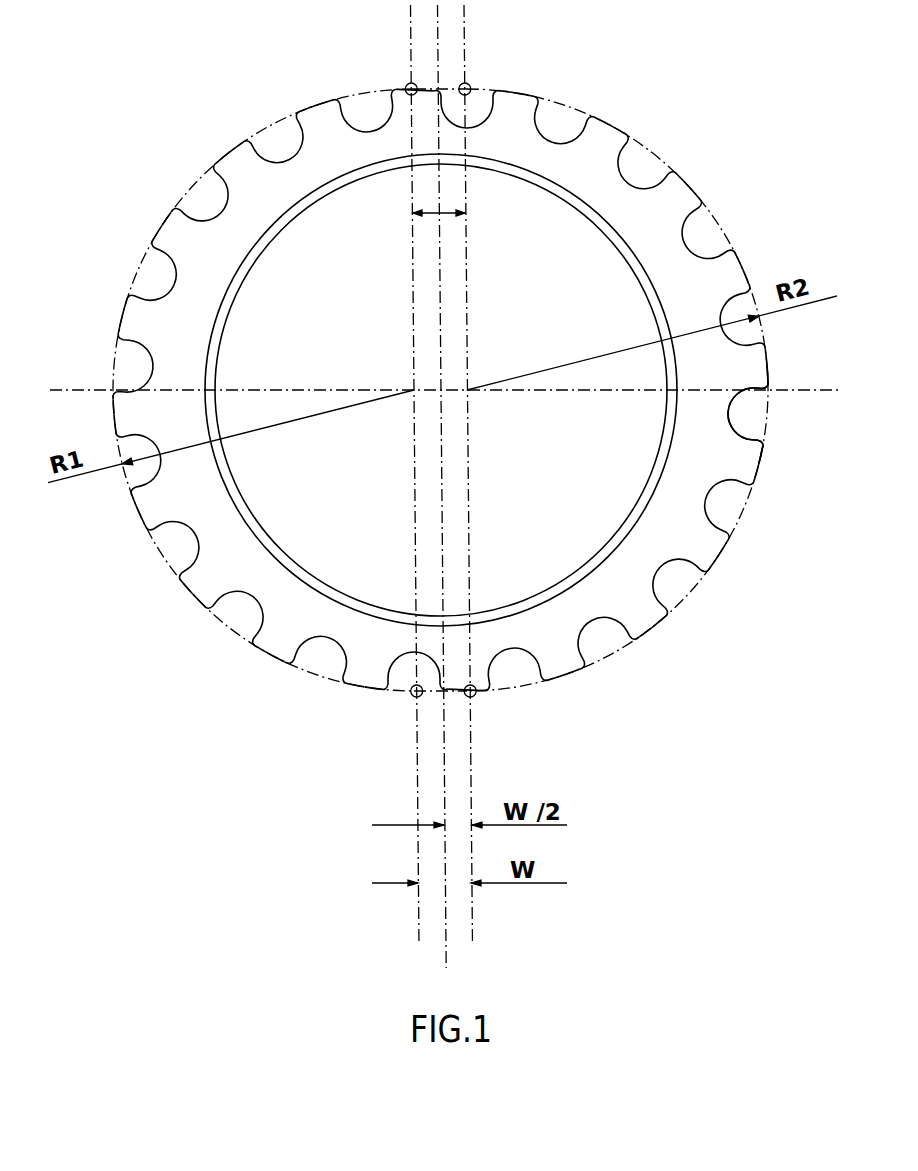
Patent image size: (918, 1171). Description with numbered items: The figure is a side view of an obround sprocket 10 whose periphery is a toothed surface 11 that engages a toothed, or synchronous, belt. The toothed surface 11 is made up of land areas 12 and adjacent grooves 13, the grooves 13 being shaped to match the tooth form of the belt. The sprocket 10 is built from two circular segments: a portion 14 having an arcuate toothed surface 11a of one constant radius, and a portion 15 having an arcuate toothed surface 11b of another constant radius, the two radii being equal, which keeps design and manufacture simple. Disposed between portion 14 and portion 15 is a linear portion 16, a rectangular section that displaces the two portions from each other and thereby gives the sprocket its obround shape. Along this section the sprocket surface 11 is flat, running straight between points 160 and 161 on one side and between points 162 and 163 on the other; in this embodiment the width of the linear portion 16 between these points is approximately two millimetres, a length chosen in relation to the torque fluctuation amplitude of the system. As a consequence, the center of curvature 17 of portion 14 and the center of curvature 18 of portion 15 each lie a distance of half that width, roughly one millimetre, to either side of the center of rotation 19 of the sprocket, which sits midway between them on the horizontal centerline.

The sprocket 10 is at (567, 247).
The toothed surface 11 is at (697, 207).
The arcuate toothed surface 11a is at (685, 605).
The arcuate toothed surface 11b is at (240, 640).
The land areas 12 is at (125, 311).
The grooves 13 is at (150, 373).
The portion 14 is at (680, 532).
The portion 15 is at (210, 577).
The linear portion 16 is at (443, 209).
The center of curvature 17 is at (469, 388).
The center of curvature 18 is at (412, 388).
The center of rotation 19 is at (438, 388).
The point 160 is at (413, 697).
The point 161 is at (474, 697).
The point 162 is at (406, 85).
The point 163 is at (470, 85).